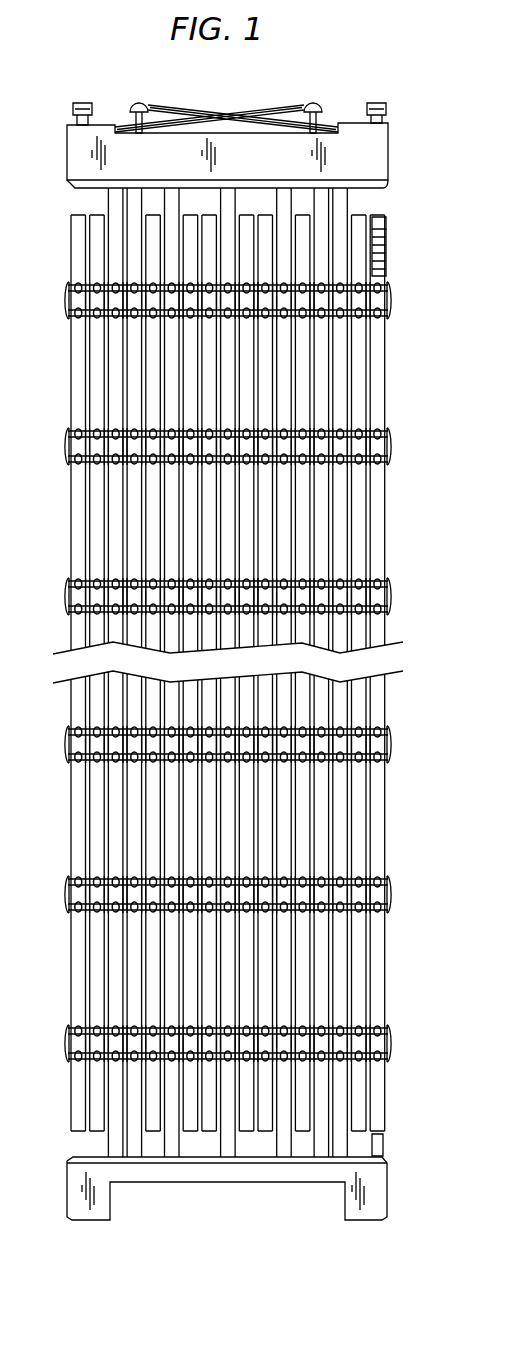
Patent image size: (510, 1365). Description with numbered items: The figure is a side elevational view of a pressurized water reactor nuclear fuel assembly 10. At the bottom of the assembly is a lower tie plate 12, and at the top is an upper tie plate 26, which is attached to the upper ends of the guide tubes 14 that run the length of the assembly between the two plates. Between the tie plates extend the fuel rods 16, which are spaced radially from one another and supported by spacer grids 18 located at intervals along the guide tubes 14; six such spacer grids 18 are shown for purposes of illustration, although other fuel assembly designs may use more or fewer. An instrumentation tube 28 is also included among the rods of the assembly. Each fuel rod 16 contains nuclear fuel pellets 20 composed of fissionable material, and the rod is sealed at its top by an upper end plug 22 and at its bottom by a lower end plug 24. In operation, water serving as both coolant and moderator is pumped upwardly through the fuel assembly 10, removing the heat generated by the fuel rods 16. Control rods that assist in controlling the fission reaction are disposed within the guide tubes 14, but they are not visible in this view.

The nuclear fuel assembly 10 is at (427, 546).
The lower tie plate 12 is at (376, 1191).
The guide tubes 14 is at (352, 200).
The fuel rods 16 is at (228, 1084).
The spacer grids 18 is at (390, 308).
The nuclear fuel pellets 20 is at (388, 263).
The upper end plug 22 is at (388, 228).
The lower end plug 24 is at (381, 1135).
The upper tie plate 26 is at (372, 157).
The instrumentation tube 28 is at (243, 1145).